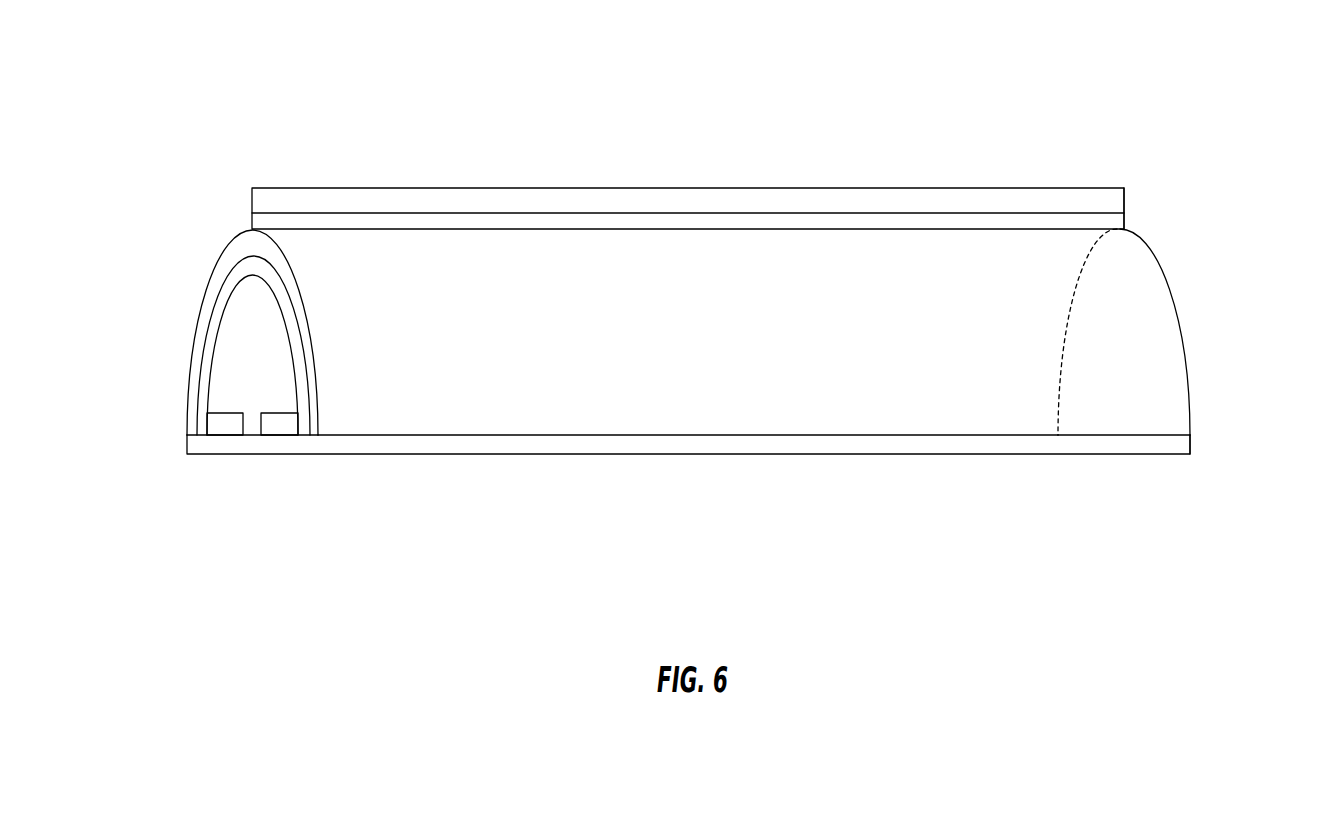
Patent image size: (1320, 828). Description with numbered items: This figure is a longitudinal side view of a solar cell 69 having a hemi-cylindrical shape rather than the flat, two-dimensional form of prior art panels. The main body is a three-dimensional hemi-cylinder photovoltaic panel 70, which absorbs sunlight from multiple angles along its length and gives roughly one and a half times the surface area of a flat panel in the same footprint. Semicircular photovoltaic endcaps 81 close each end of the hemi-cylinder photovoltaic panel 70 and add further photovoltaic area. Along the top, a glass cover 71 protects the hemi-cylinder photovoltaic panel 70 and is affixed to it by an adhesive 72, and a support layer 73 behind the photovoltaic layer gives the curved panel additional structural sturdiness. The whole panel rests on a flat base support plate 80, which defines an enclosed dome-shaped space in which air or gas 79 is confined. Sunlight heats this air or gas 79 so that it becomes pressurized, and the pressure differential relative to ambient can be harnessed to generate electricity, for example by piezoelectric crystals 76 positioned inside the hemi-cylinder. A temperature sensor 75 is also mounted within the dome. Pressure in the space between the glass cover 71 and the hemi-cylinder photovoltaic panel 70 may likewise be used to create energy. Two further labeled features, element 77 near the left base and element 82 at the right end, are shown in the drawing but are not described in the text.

The solar cell 69 is at (1256, 124).
The hemi-cylinder photovoltaic panel 70 is at (1188, 360).
The glass cover 71 is at (995, 188).
The adhesive 72 is at (382, 212).
The support layer 73 is at (210, 358).
The temperature sensor 75 is at (223, 426).
The piezoelectric crystals 76 is at (280, 426).
The circuit board 77 is at (187, 435).
The air or gas 79 is at (756, 340).
The base support plate 80 is at (695, 455).
The semicircular photovoltaic endcaps 81 is at (273, 373).
The end edge 82 is at (1212, 427).